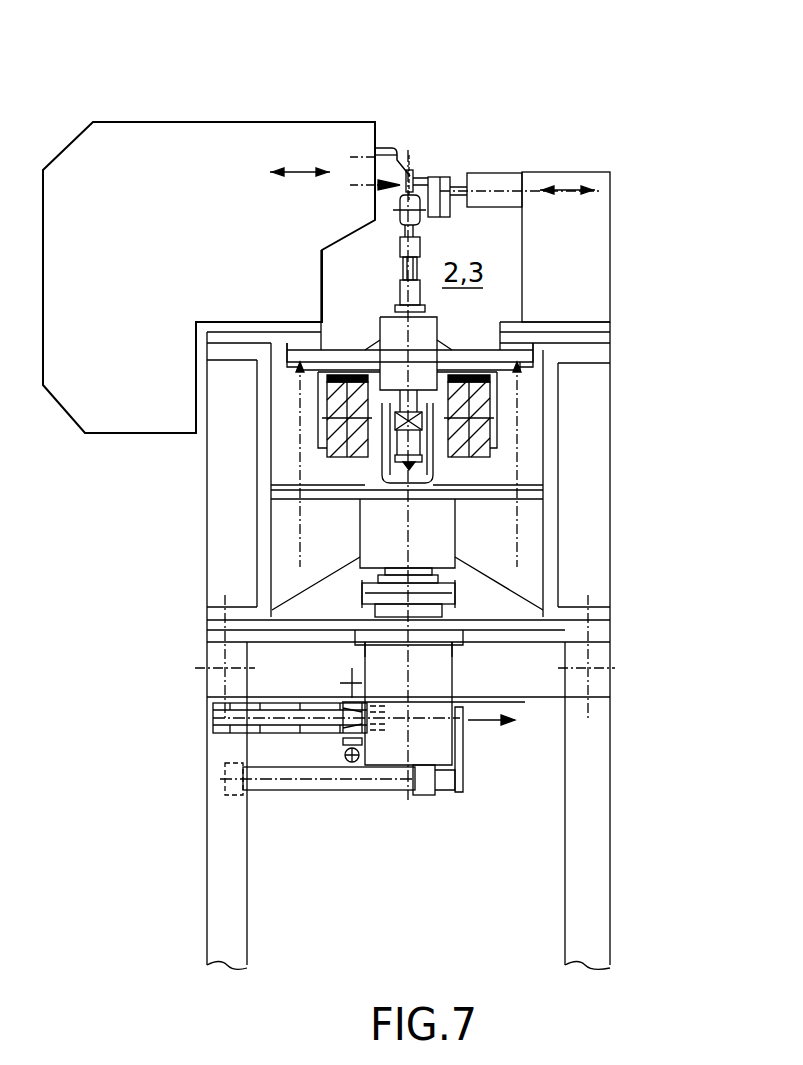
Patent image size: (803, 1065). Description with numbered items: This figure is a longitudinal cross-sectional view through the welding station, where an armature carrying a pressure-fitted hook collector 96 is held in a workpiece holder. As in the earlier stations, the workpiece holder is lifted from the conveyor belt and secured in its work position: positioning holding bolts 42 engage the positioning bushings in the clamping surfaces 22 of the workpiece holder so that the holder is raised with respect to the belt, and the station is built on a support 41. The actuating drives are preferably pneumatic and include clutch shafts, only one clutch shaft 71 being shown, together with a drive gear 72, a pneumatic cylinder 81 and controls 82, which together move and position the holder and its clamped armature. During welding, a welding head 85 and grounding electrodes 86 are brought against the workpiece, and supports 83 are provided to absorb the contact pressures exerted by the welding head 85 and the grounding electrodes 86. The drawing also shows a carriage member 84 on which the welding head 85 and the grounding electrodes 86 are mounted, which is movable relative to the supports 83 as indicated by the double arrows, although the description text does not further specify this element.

The tool carriage block 84 is at (245, 167).
The welding head 85 is at (373, 170).
The grounding electrodes 86 is at (392, 157).
The hook collector 96 is at (417, 175).
The supports 83 is at (548, 185).
The clamping surfaces 22 is at (517, 349).
The positioning holding bolts 42 is at (517, 389).
The support 41 is at (550, 450).
The clutch shaft 71 is at (490, 493).
The drive gear 72 is at (443, 588).
The controls 82 is at (283, 717).
The pneumatic cylinder 81 is at (560, 810).